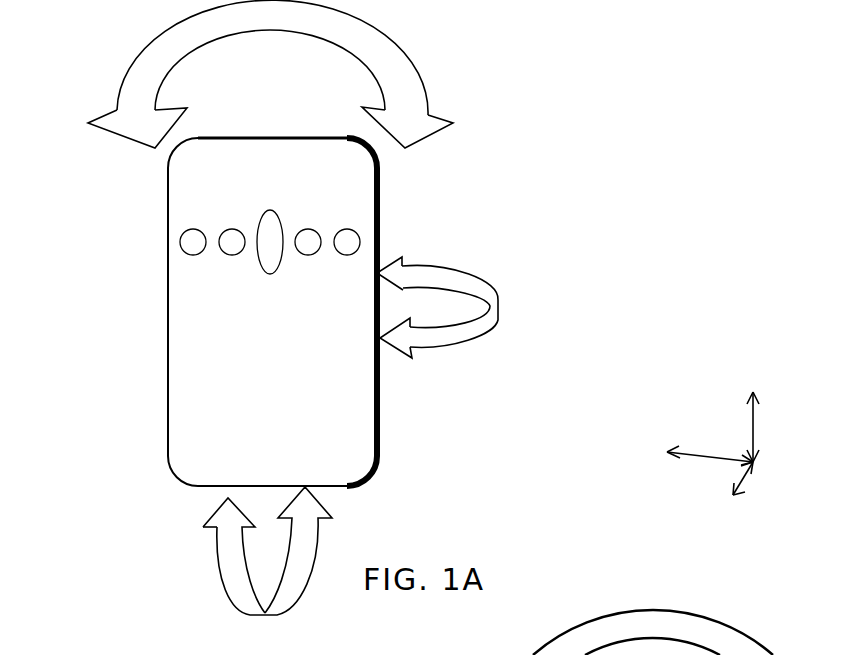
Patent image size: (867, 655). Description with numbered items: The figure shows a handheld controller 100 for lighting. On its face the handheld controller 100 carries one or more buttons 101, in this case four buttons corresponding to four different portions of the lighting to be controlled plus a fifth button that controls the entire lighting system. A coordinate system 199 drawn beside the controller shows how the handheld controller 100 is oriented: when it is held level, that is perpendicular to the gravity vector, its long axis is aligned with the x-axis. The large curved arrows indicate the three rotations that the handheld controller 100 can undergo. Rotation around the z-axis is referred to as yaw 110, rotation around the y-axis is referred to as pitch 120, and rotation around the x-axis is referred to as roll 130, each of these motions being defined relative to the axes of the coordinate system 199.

The handheld controller 100 is at (167, 427).
The buttons 101 is at (205, 273).
The yaw 110 is at (92, 140).
The pitch 120 is at (222, 592).
The roll 130 is at (453, 358).
The coordinate system 199 is at (705, 408).